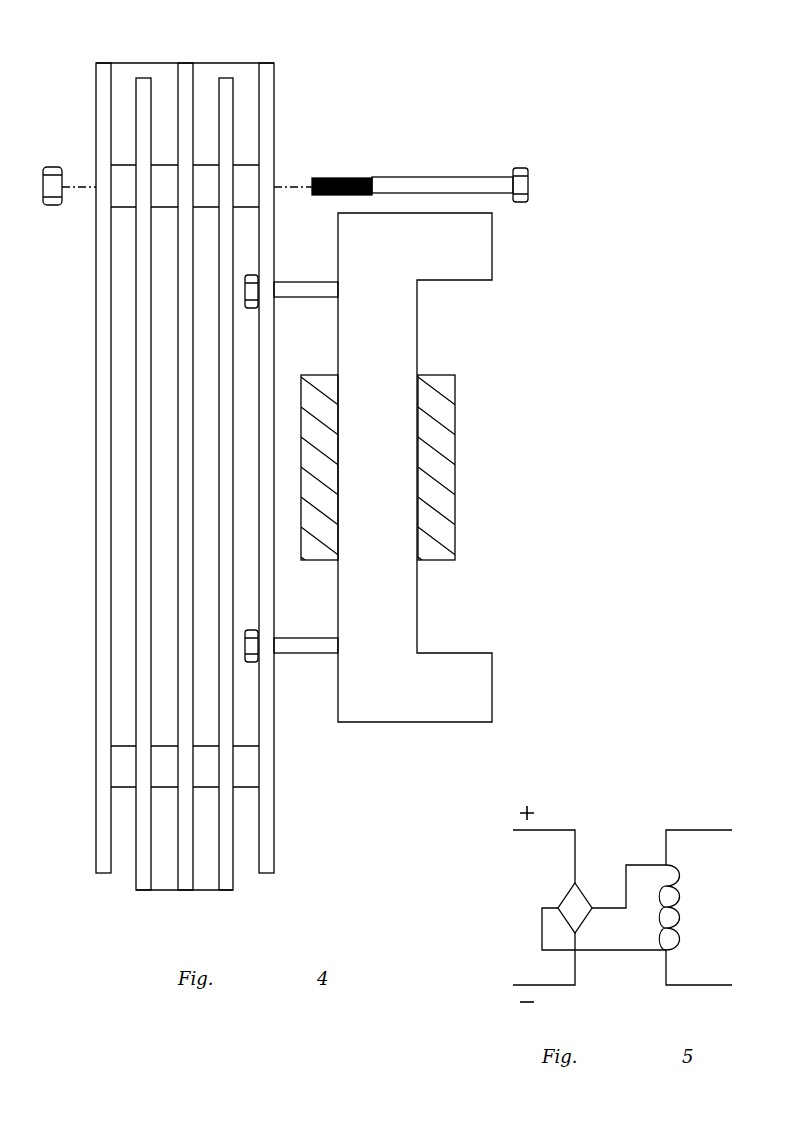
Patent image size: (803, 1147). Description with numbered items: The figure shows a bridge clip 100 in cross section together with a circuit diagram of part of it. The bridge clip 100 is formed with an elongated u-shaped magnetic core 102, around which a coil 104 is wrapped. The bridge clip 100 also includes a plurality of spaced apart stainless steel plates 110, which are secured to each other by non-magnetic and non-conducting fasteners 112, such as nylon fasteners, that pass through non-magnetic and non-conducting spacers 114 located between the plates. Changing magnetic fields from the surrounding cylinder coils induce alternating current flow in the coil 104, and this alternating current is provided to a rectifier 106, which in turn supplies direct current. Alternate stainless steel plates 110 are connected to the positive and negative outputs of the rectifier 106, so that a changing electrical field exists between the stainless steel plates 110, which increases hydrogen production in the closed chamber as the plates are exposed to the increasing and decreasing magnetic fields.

In FIG. 4, the bridge clip 100 is at (352, 93).
In FIG. 4, the magnetic core 102 is at (437, 627).
In FIG. 4, the coil 104 is at (445, 475).
In FIG. 5, the coil 104 is at (680, 905).
In FIG. 5, the rectifier 106 is at (557, 906).
In FIG. 4, the stainless steel plates 110 is at (96, 851).
In FIG. 4, the fasteners 112 is at (442, 177).
In FIG. 4, the spacers 114 is at (245, 163).